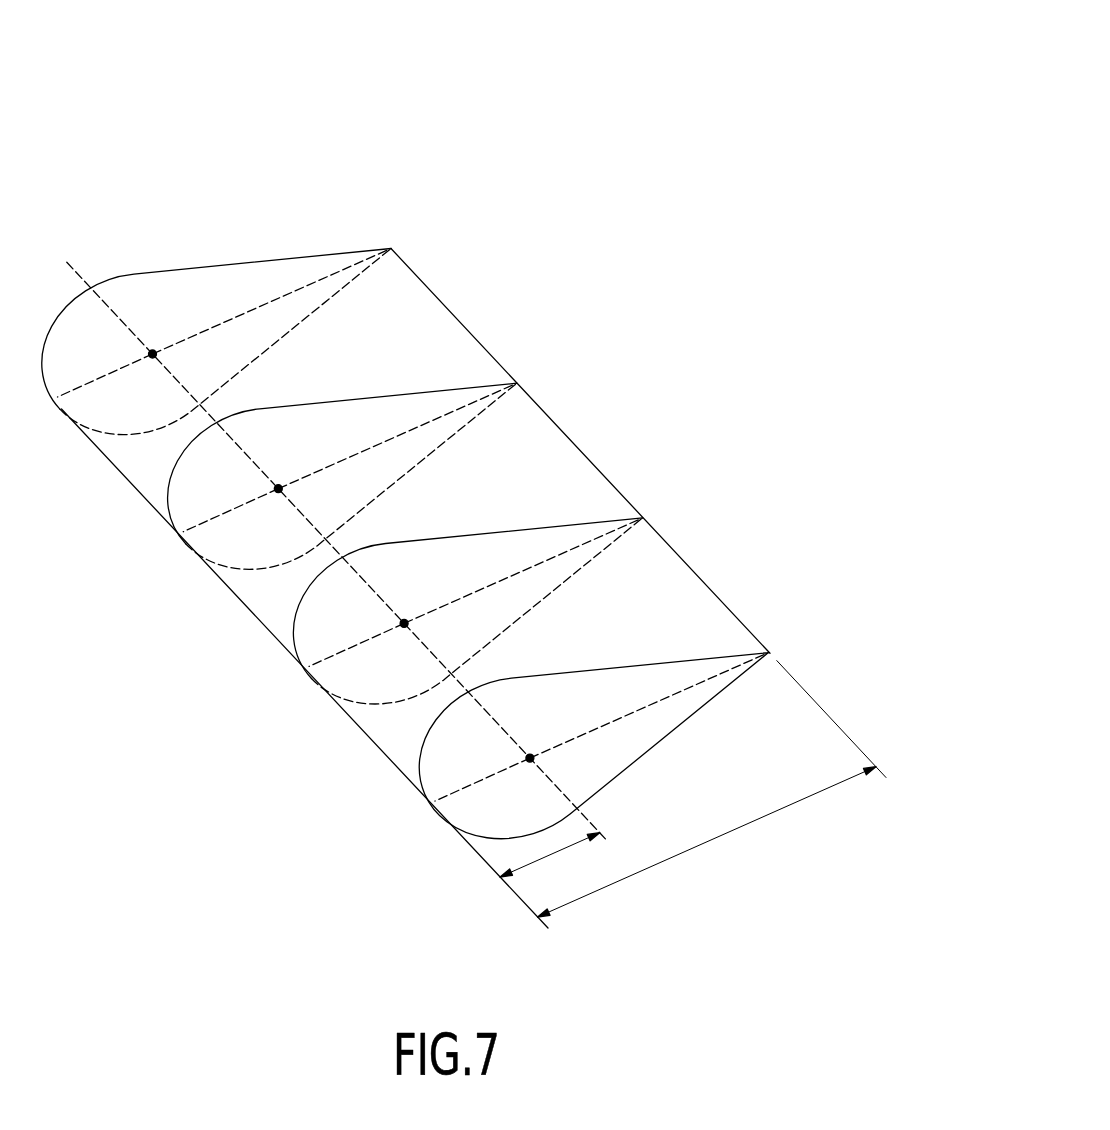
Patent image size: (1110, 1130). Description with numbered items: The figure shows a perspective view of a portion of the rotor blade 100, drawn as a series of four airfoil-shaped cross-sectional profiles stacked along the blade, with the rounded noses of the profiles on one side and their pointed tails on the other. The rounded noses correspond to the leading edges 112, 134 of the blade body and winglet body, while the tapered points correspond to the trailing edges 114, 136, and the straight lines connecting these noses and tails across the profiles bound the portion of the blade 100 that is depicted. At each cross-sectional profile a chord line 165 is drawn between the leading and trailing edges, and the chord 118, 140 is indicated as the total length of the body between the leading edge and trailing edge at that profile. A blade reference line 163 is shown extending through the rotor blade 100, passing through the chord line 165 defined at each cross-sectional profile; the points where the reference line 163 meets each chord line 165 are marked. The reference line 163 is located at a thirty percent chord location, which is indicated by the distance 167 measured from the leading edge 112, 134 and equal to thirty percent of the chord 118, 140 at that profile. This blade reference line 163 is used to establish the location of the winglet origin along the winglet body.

The rotor blade 100 is at (737, 113).
The leading edge 112 is at (305, 668).
The leading edge 134 is at (283, 645).
The trailing edge 114 is at (638, 513).
The trailing edge 136 is at (672, 549).
The chord 118 is at (707, 842).
The chord 140 is at (704, 843).
The blade reference line 163 is at (66, 263).
The chord line 165 is at (405, 544).
The distance 167 is at (558, 850).